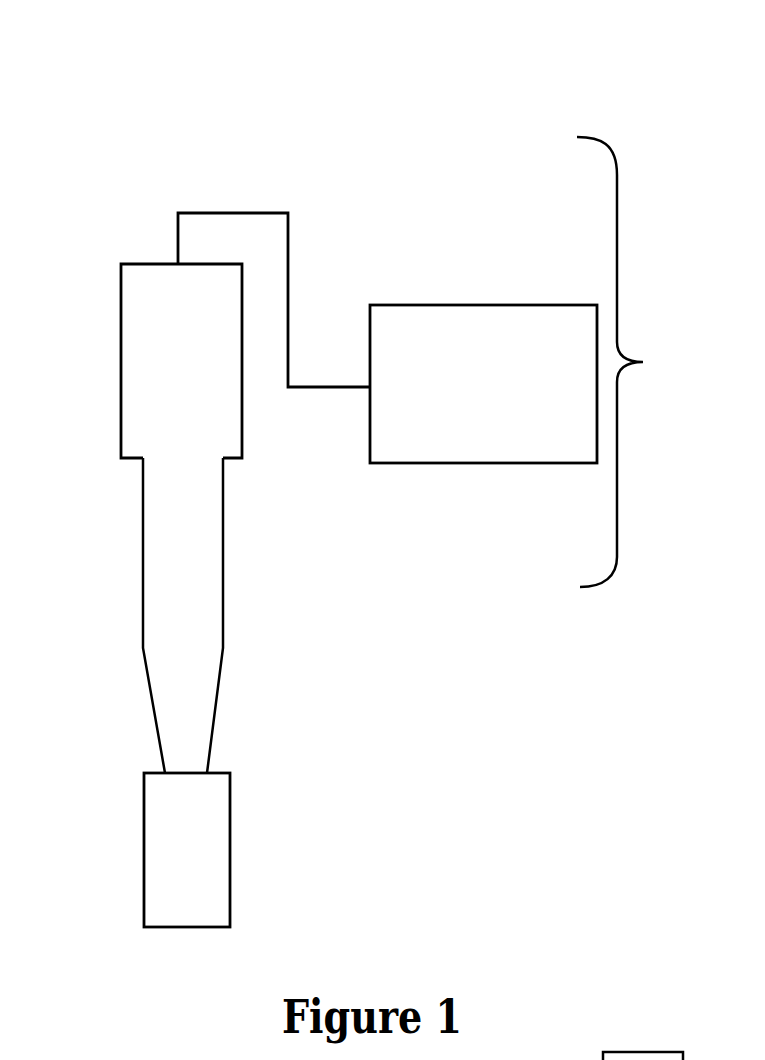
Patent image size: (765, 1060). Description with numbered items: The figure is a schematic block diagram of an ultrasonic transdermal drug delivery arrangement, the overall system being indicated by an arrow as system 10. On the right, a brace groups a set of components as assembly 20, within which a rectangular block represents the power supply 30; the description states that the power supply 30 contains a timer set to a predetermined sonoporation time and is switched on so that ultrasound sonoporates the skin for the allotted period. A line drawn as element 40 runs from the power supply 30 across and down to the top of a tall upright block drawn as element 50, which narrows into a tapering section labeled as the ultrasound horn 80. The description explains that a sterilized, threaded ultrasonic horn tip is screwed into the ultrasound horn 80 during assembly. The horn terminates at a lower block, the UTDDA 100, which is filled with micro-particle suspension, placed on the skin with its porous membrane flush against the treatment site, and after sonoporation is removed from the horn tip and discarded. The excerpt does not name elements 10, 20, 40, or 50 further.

The system 10 is at (622, 99).
The feeding assembly 20 is at (643, 362).
The power supply 30 is at (390, 463).
The feed conduit 40 is at (250, 213).
The chamber 50 is at (119, 317).
The ultrasound horn 80 is at (163, 752).
The UTDDA 100 is at (250, 849).